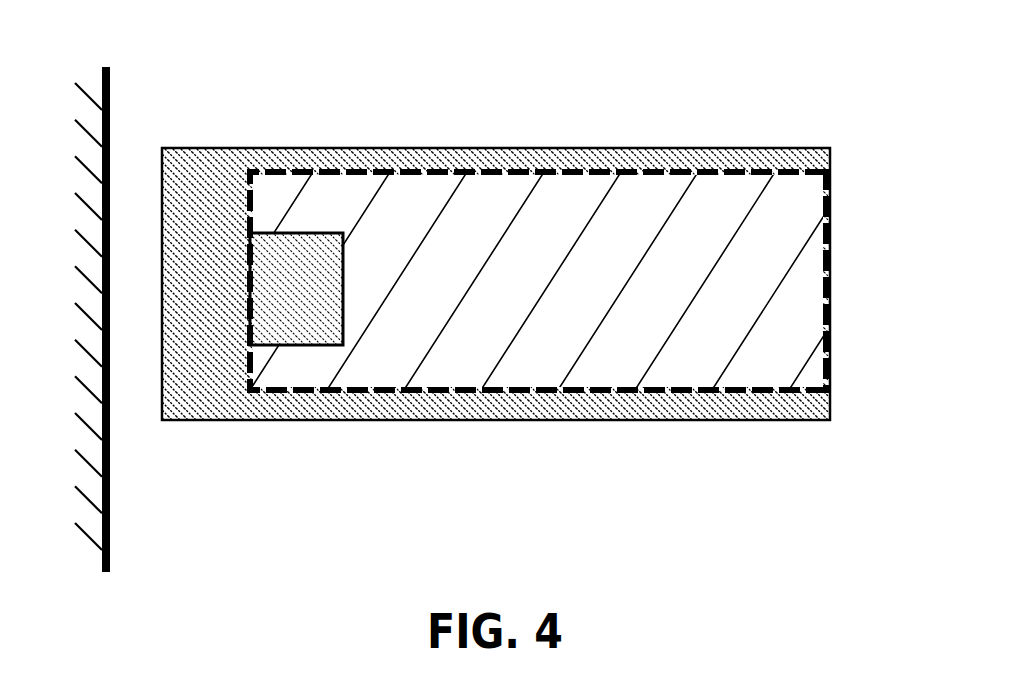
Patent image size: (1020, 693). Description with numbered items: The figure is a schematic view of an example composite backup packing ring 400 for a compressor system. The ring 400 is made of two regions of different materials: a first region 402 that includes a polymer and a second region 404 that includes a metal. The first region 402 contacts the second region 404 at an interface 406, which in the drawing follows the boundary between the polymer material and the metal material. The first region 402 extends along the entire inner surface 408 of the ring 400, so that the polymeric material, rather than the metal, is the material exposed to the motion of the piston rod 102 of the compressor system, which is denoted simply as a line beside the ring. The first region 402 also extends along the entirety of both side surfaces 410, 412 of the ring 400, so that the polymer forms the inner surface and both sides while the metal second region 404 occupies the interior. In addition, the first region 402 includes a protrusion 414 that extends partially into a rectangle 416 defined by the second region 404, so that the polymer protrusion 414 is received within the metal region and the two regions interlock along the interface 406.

The piston rod 102 is at (103, 340).
The composite backup packing ring 400 is at (469, 251).
The first region 402 is at (172, 177).
The second region 404 is at (611, 298).
The interface 406 is at (747, 390).
The inner surface 408 is at (162, 320).
The side surface 410 is at (403, 420).
The side surface 412 is at (367, 148).
The protrusion 414 is at (322, 298).
The rectangle 416 is at (832, 246).